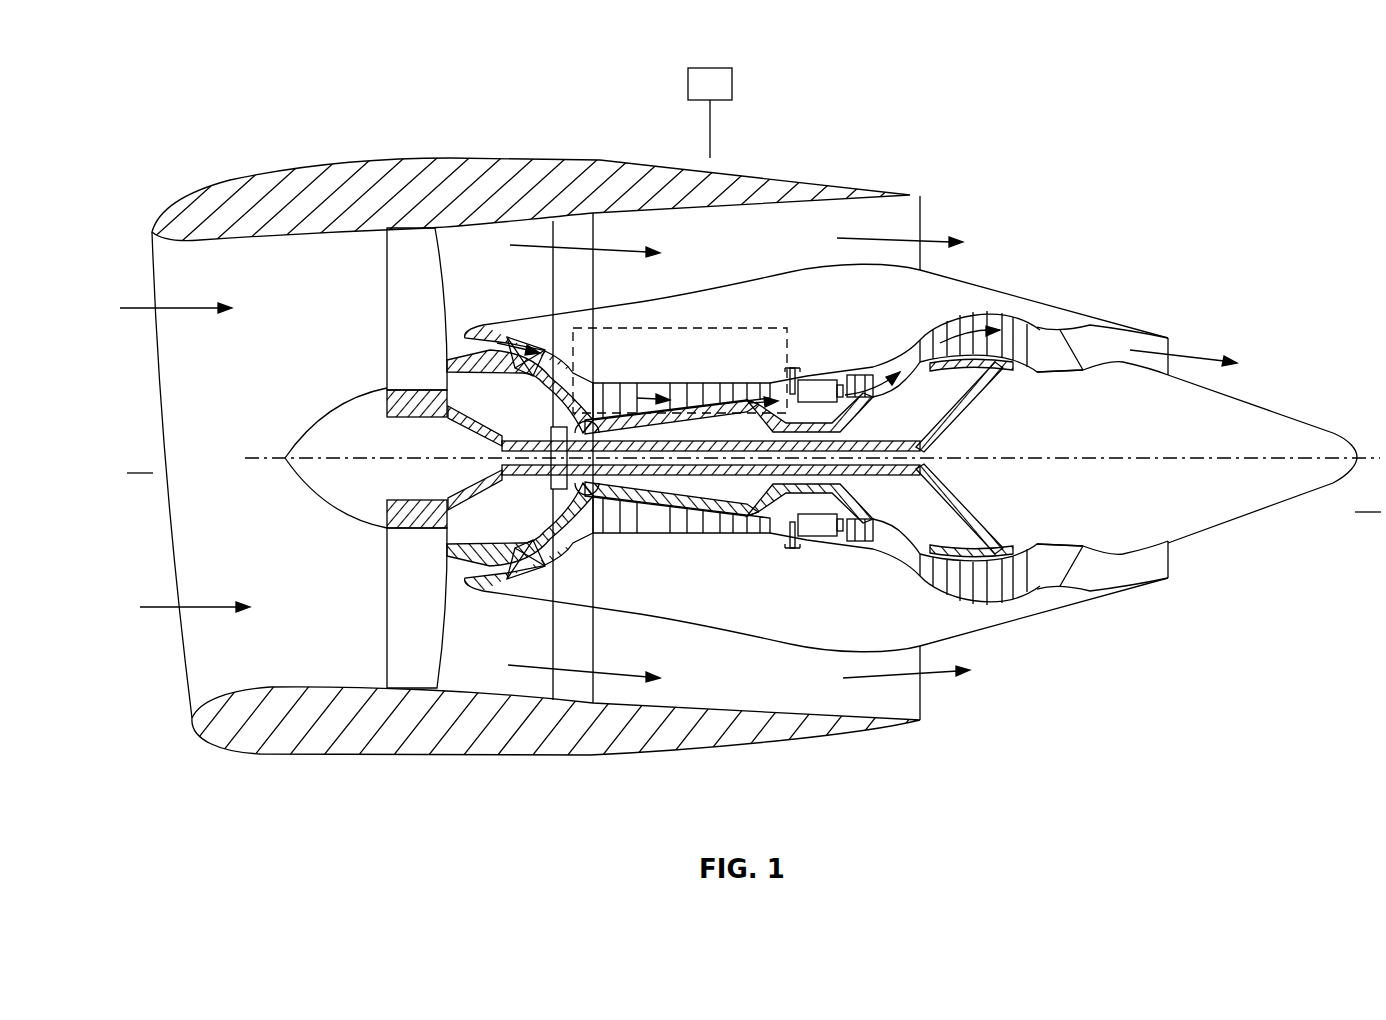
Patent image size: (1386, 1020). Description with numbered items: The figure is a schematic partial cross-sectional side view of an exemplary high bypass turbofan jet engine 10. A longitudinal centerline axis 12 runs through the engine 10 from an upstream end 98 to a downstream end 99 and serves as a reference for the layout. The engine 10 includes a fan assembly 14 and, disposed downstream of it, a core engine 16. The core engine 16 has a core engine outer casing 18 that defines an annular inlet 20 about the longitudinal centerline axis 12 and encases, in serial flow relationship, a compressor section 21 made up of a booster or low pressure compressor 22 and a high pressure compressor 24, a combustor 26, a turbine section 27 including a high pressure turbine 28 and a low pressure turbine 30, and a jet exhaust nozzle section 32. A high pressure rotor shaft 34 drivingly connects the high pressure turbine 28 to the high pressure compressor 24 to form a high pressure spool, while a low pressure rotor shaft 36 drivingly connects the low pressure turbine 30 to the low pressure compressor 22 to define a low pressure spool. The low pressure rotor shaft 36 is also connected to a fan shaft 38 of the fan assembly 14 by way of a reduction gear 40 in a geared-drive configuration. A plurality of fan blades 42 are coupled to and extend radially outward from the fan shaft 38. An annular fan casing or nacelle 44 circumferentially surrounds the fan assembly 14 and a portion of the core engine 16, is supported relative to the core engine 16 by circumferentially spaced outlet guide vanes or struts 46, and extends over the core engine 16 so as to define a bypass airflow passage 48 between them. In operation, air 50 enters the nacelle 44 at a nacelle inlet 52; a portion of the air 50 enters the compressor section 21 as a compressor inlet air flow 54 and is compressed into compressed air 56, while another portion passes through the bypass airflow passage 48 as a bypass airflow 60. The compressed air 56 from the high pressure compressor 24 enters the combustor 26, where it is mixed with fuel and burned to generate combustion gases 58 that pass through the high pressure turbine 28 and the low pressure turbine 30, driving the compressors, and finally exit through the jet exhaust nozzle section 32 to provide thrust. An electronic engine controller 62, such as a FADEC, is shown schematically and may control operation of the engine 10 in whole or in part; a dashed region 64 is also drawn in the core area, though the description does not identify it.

The high by-pass turbofan jet engine 10 is at (1090, 160).
The longitudinal centerline axis 12 is at (1165, 452).
The fan assembly 14 is at (480, 262).
The core engine 16 is at (790, 260).
The core engine outer casing 18 is at (763, 637).
The annular inlet 20 is at (492, 577).
The compressor section 21 is at (615, 560).
The low pressure (LP) compressor 22 is at (530, 525).
The high pressure (HP) compressor 24 is at (623, 527).
The combustor 26 is at (813, 527).
The turbine section 27 is at (888, 573).
The high pressure (HP) turbine 28 is at (953, 517).
The low pressure (LP) turbine 30 is at (1005, 605).
The jet exhaust nozzle section 32 is at (1080, 577).
The high pressure (HP) rotor shaft 34 is at (855, 423).
The low pressure (LP) rotor shaft 36 is at (957, 413).
The fan shaft 38 is at (453, 412).
The reduction gear 40 is at (557, 426).
The fan blades 42 is at (388, 312).
The nacelle 44 is at (387, 158).
The outlet guide vanes or struts 46 is at (578, 228).
The bypass airflow passage 48 is at (704, 258).
The air 50 is at (205, 305).
The nacelle inlet 52 is at (247, 660).
The compressor inlet air flow 54 is at (478, 333).
The compressed air 56 is at (733, 397).
The combustion gases 58 is at (870, 380).
The bypass airflow 60 is at (610, 247).
The electronic engine controller 62 is at (697, 98).
The sensor region 64 is at (755, 325).
The upstream end 98 is at (140, 458).
The downstream end 99 is at (1368, 497).